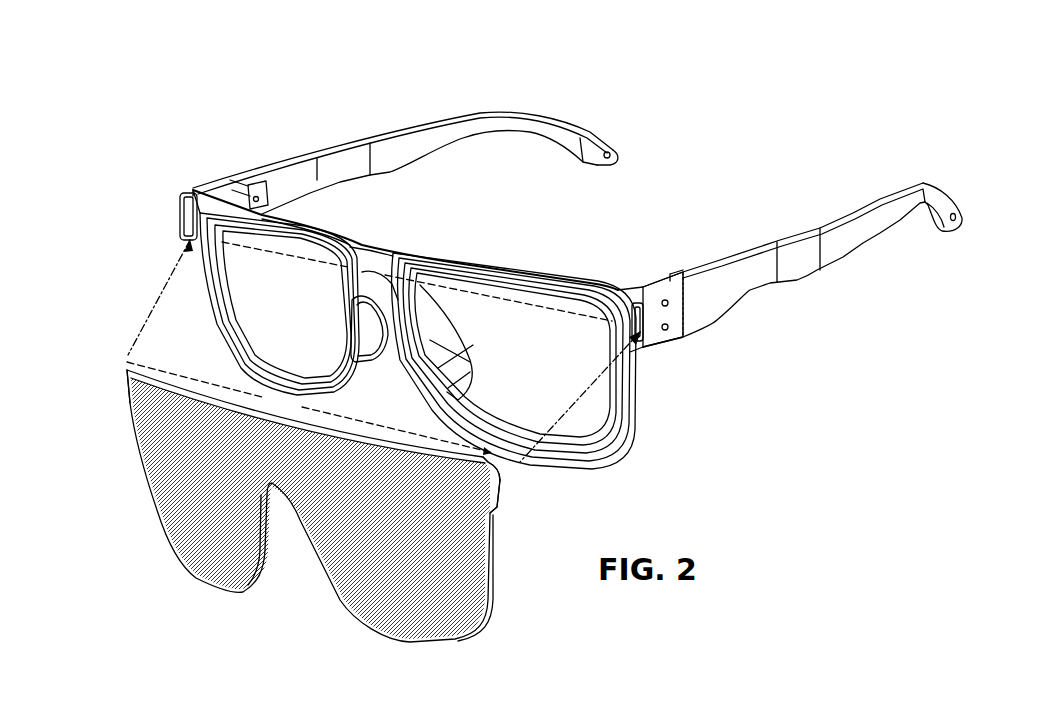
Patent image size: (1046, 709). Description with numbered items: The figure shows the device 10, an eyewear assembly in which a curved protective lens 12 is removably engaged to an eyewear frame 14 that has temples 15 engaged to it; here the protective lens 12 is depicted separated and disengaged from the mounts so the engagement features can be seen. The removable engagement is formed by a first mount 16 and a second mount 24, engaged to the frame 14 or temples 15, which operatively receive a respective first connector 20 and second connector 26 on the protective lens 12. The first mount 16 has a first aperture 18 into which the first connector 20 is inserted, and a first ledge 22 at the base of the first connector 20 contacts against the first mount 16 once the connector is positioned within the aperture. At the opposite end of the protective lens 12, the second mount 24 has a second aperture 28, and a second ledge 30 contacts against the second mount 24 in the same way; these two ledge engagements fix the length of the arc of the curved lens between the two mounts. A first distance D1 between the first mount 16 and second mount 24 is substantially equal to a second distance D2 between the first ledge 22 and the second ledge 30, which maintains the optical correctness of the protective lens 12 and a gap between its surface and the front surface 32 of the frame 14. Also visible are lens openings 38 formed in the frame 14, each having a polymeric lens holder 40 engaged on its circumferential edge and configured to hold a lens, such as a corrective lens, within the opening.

The device 10 is at (715, 432).
The protective lens 12 is at (157, 461).
The eyewear frame 14 is at (597, 289).
The temples 15 is at (412, 137).
The first mount 16 is at (645, 286).
The first aperture 18 is at (641, 336).
The first connector 20 is at (503, 497).
The first ledge 22 is at (490, 468).
The second mount 24 is at (193, 190).
The second connector 26 is at (127, 400).
The second aperture 28 is at (193, 190).
The second ledge 30 is at (127, 370).
The front surface 32 is at (378, 257).
The lens openings 38 is at (298, 308).
The polymeric lens holders 40 is at (263, 217).
The first distance D1 is at (417, 281).
The second distance D2 is at (309, 408).